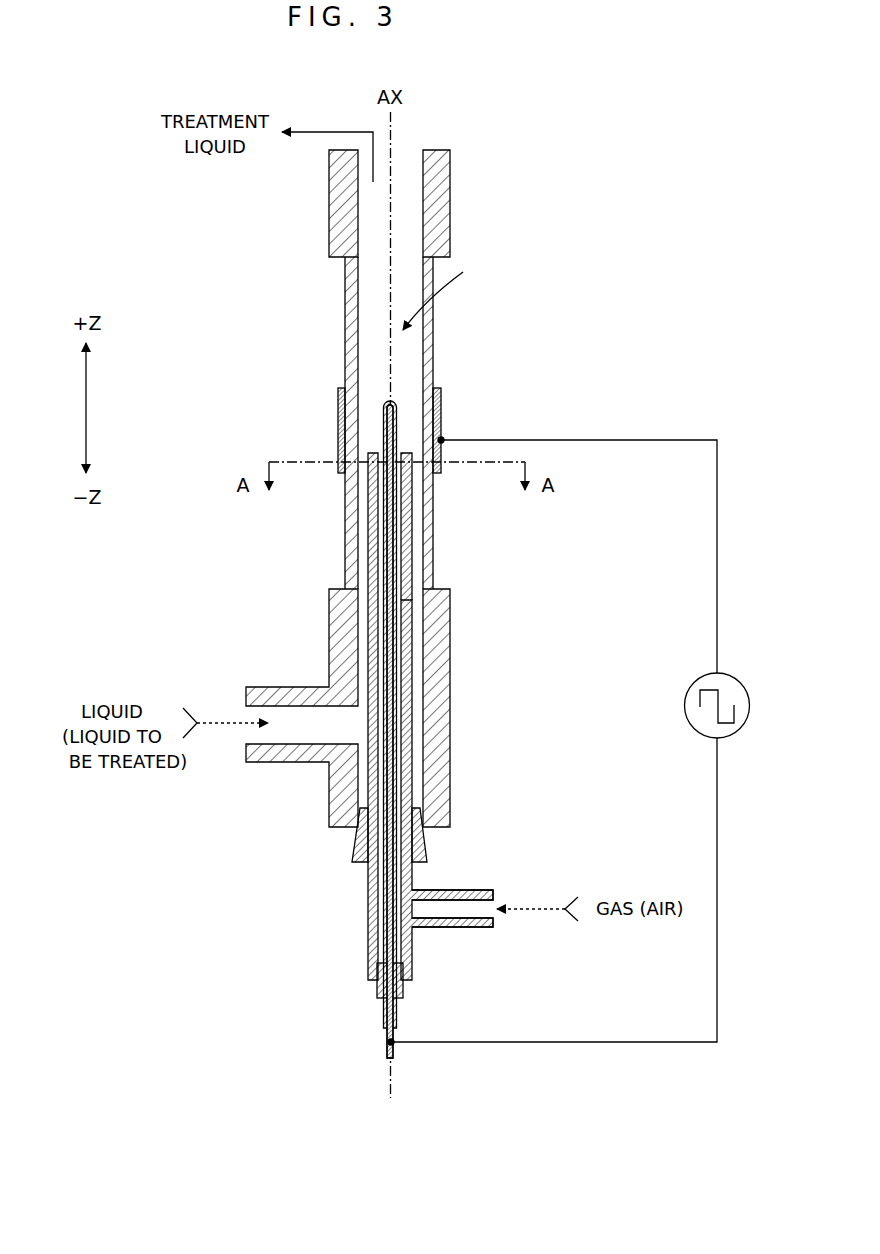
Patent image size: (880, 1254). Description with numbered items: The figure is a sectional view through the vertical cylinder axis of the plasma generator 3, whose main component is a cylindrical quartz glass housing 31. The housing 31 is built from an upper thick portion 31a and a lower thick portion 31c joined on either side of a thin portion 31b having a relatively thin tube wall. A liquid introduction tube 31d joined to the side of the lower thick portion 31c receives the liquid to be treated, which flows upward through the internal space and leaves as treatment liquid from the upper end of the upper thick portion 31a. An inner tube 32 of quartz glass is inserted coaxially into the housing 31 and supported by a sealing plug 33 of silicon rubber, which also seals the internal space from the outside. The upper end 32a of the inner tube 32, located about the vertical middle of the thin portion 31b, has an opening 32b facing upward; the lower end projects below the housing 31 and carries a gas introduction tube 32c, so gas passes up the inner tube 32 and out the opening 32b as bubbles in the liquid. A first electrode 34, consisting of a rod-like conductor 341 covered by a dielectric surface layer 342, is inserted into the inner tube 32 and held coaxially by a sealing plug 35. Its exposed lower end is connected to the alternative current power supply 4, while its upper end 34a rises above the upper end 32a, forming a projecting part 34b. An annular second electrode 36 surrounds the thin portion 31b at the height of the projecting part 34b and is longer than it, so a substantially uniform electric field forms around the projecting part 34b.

The plasma generator 3 is at (523, 197).
The alternative current power supply 4 is at (748, 693).
The housing 31 is at (265, 612).
The upper thick portion 31a is at (329, 203).
The thin portion 31b is at (345, 520).
The lower thick portion 31c is at (329, 630).
The liquid introduction tube 31d is at (255, 763).
The inner tube 32 is at (412, 557).
The upper end of the inner tube 32a is at (405, 450).
The opening 32b is at (372, 452).
The gas introduction tube 32c is at (465, 928).
The sealing plug 33 is at (360, 845).
The first electrode 34 is at (288, 1023).
The upper end of the first electrode 34a is at (387, 397).
The projecting part 34b is at (379, 428).
The conductor 341 is at (387, 1050).
The surface layer 342 is at (383, 1013).
The sealing plug 35 is at (377, 990).
The second electrode 36 is at (441, 398).